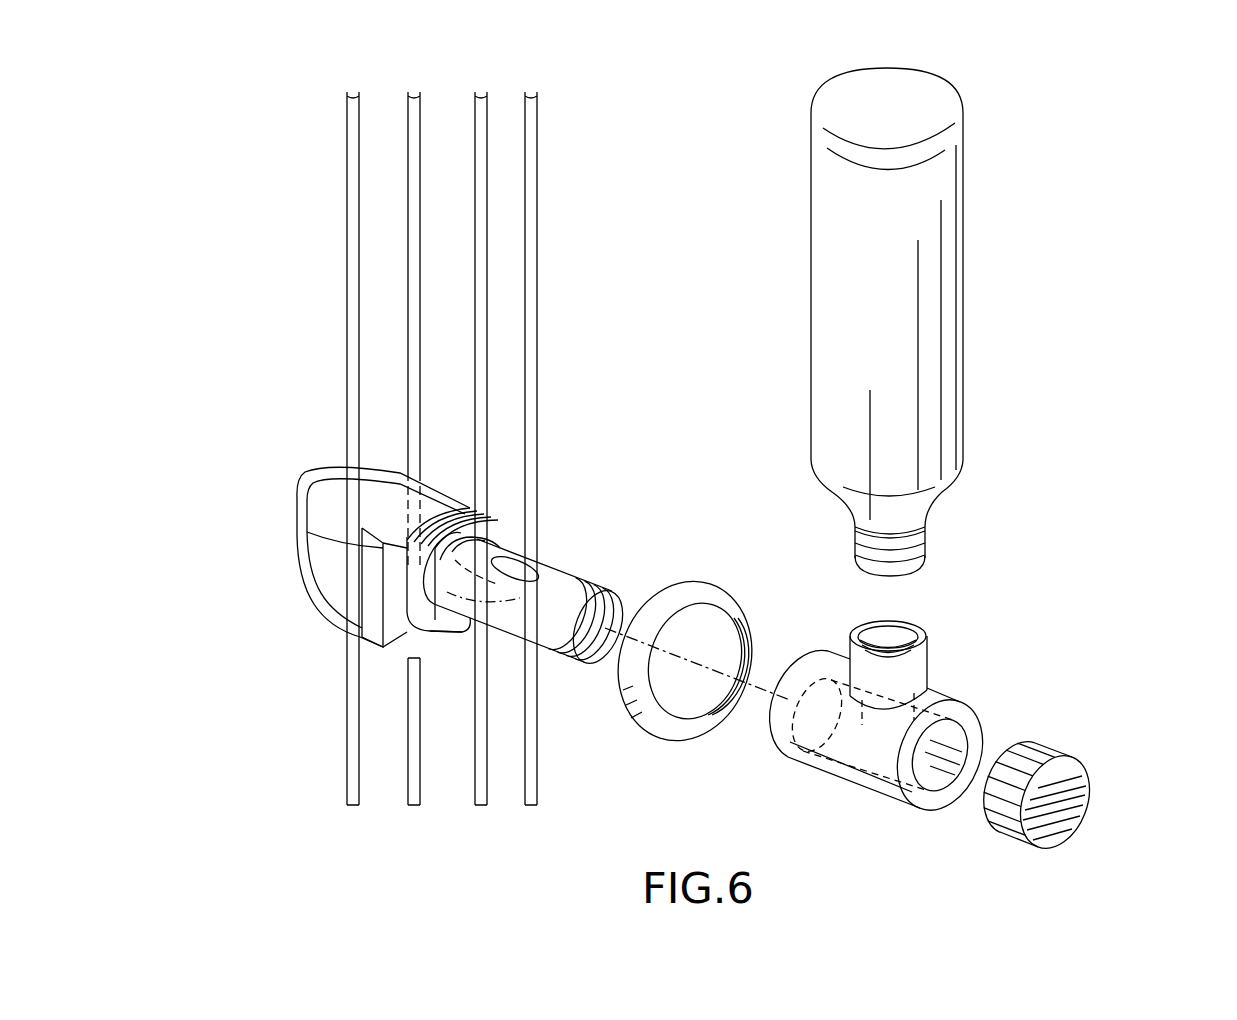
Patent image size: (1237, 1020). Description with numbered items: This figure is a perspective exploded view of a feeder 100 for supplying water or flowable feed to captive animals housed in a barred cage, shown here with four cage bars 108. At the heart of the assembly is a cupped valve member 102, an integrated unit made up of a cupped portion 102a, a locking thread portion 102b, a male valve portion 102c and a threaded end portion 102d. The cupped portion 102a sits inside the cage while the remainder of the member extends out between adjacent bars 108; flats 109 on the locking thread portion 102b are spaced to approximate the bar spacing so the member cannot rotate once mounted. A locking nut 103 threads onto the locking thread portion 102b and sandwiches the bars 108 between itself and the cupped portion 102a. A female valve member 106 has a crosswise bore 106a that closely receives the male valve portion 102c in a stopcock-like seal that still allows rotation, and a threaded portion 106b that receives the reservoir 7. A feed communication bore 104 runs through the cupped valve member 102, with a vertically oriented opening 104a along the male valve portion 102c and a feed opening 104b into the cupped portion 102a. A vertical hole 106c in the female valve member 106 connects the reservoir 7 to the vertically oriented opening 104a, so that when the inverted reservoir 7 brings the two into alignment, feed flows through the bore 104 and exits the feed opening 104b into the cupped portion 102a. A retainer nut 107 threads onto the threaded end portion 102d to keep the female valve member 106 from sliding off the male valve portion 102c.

The feeder 100 is at (1179, 180).
The reservoir 7 is at (926, 322).
The bars 108 is at (443, 448).
The cupped valve member 102 is at (361, 576).
The cupped portion 102a is at (351, 523).
The locking thread portion 102b is at (365, 570).
The male valve portion 102c is at (351, 588).
The threaded end portion 102d is at (390, 651).
The feed communication bore 104 is at (607, 578).
The vertically oriented opening 104a is at (605, 600).
The feed opening 104b is at (535, 541).
The flats 109 is at (560, 508).
The locking nut 103 is at (673, 674).
The female valve member 106 is at (895, 714).
The crosswise bore 106a is at (940, 780).
The threaded portion 106b is at (929, 632).
The vertical hole 106c is at (901, 708).
The retainer nut 107 is at (1058, 783).